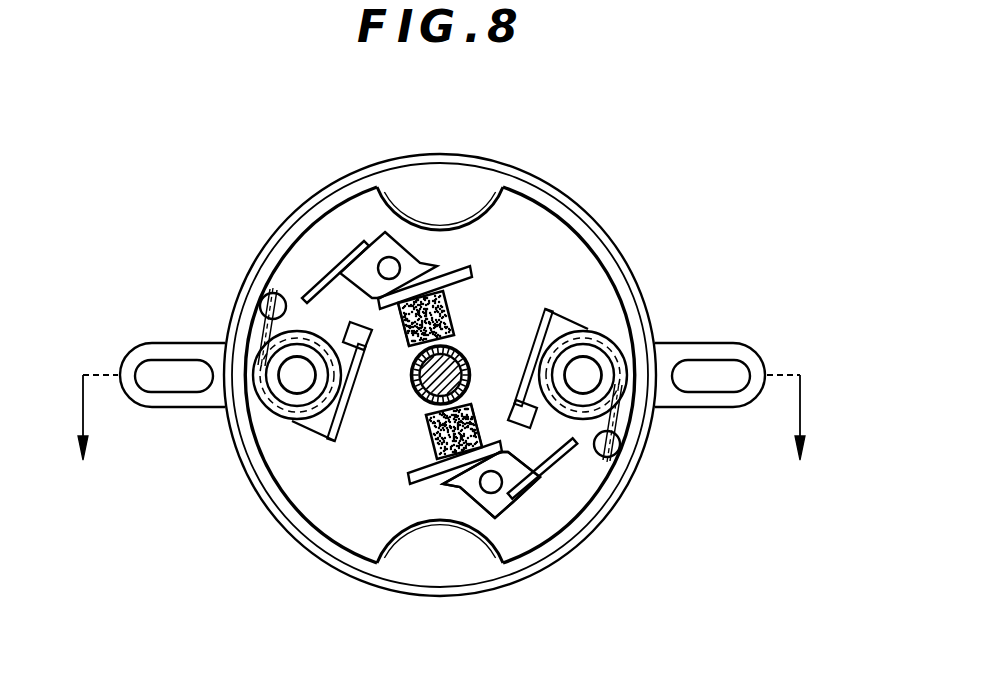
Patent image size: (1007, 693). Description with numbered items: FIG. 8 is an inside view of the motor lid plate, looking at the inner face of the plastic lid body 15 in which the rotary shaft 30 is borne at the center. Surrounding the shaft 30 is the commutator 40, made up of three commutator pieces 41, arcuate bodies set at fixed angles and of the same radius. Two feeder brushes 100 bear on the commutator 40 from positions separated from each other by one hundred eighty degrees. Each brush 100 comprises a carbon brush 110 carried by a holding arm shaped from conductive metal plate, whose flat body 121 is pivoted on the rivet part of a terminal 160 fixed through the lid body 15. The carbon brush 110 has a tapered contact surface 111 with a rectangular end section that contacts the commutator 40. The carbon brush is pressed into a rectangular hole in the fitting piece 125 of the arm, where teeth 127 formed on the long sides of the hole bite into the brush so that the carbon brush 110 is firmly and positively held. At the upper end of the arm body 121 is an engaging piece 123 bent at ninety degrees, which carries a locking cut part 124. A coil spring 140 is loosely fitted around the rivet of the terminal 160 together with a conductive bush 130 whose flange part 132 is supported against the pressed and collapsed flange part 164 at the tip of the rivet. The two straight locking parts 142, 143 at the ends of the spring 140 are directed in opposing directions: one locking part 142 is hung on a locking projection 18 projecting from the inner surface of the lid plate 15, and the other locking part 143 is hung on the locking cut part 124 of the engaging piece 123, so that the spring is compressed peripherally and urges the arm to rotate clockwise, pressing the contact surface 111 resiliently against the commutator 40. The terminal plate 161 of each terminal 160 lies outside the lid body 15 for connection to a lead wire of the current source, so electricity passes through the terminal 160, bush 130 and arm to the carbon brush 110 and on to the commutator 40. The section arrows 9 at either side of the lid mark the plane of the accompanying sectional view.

The section line 9- 9 is at (445, 443).
The lid body 15 is at (551, 180).
The locking projection 18 is at (262, 296).
The rotary shaft 30 is at (468, 346).
The commutator 40 is at (400, 409).
The commutator pieces 41 is at (472, 345).
The feeder brush 100 is at (405, 225).
The carbon brush 110 is at (472, 298).
The contact surface 111 is at (378, 312).
The flat body 121 is at (548, 508).
The engaging piece 123 is at (337, 440).
The locking cut part 124 is at (343, 275).
The fitting piece 125 is at (440, 290).
The teeth 127 is at (328, 296).
The bush 130 is at (266, 434).
The flange part 132 is at (293, 420).
The coil spring 140 is at (620, 343).
The locking part 142 is at (260, 333).
The locking part 143 is at (362, 353).
The terminal 160 is at (150, 418).
The terminal plate 161 is at (158, 345).
The flange part 164 is at (273, 381).